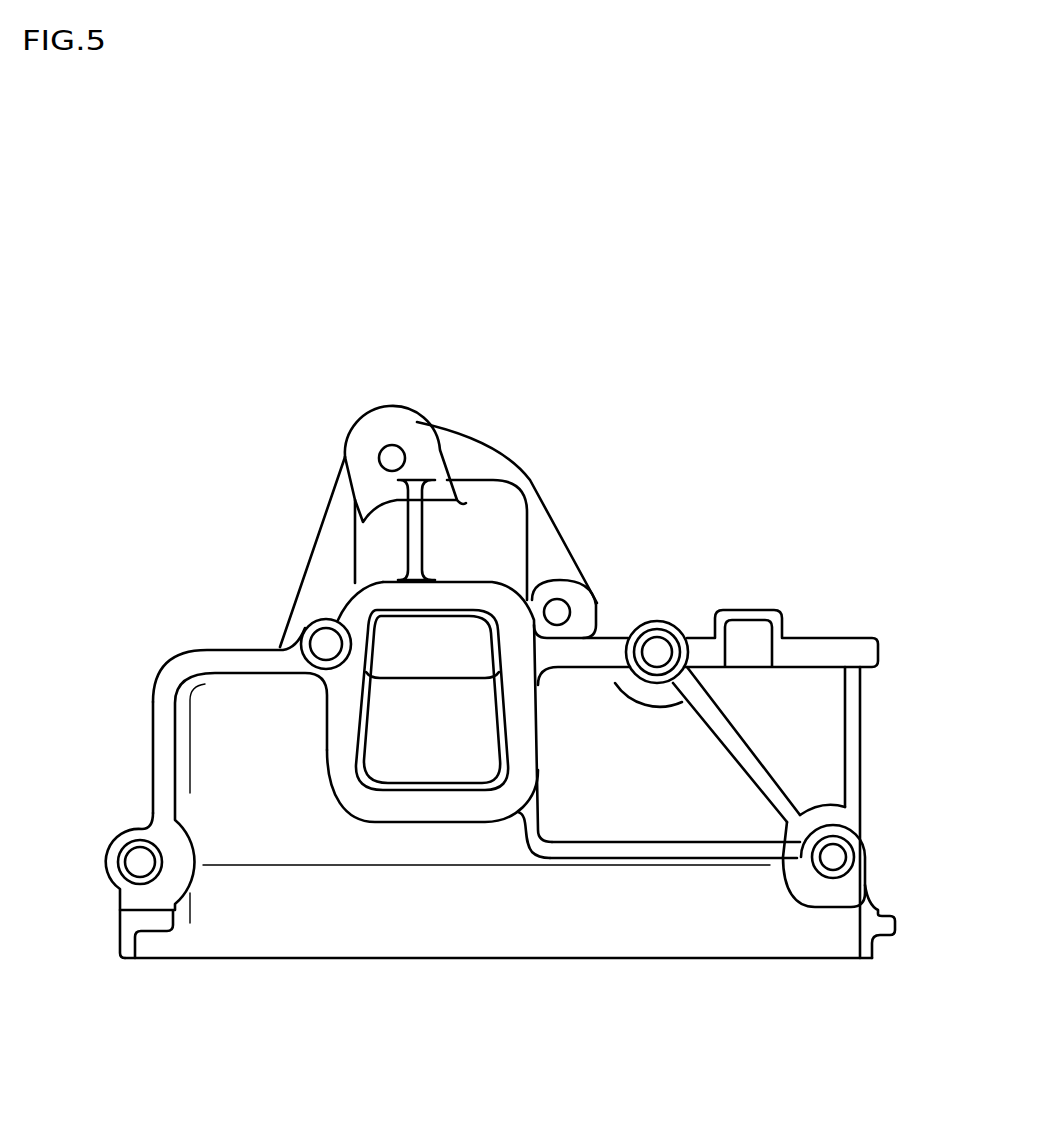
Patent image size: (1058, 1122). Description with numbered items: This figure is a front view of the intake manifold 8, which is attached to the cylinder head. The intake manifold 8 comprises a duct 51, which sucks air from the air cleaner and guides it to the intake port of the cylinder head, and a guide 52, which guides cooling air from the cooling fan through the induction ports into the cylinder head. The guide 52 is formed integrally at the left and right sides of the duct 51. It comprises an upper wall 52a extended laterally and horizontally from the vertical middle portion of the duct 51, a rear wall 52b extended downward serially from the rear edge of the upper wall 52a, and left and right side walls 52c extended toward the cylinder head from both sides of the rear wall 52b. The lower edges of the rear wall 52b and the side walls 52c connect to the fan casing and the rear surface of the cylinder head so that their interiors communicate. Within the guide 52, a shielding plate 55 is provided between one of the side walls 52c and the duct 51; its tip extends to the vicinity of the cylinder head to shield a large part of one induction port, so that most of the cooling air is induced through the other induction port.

The intake manifold 8 is at (674, 450).
The duct 51 is at (346, 558).
The guide 52 is at (184, 644).
The upper wall 52a is at (697, 637).
The rear wall 52b is at (482, 959).
The side walls 52c is at (150, 775).
The shielding plate 55 is at (692, 858).